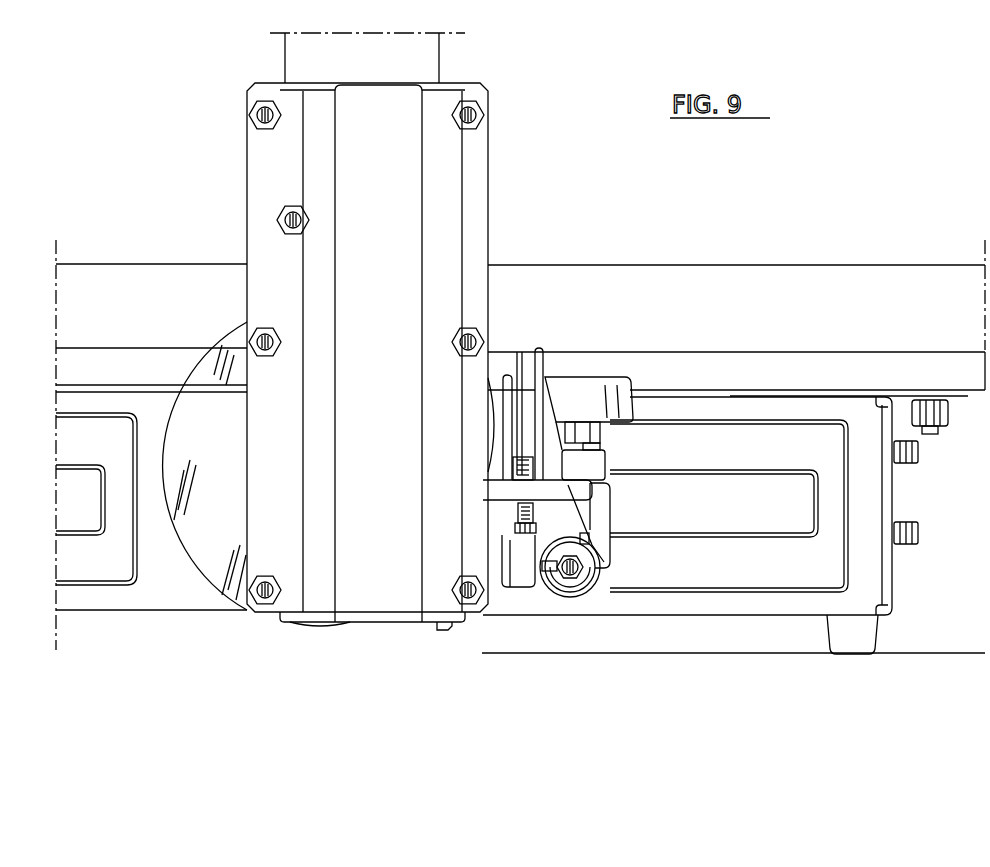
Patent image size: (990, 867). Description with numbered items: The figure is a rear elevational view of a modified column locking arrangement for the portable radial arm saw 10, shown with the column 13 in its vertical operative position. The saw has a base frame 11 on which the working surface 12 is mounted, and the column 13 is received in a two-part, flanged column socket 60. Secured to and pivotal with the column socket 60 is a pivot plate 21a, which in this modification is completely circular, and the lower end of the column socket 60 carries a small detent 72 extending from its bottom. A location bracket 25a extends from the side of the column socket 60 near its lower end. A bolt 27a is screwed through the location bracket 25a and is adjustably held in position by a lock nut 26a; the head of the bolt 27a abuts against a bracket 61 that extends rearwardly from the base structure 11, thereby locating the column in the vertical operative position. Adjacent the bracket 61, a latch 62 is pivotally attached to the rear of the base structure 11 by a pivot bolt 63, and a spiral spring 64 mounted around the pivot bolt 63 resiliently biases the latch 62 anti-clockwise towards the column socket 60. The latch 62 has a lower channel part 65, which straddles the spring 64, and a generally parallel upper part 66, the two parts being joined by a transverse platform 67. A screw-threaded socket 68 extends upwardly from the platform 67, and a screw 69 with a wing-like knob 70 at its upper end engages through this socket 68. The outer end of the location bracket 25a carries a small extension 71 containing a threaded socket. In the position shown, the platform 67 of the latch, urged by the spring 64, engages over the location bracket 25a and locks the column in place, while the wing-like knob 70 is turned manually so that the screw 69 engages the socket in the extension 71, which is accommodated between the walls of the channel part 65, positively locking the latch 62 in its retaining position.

The radial arm saw 10 is at (686, 243).
The base frame 11 is at (905, 591).
The working surface 12 is at (782, 343).
The column 13 is at (439, 60).
The pivot plate 21a is at (210, 540).
The location bracket 25a is at (608, 570).
The lock nut 26a is at (517, 352).
The bolt 27a is at (522, 508).
The column socket 60 is at (502, 138).
The bracket 61 is at (508, 500).
The latch 62 is at (640, 493).
The pivot bolt 63 is at (573, 580).
The spiral spring 64 is at (598, 585).
The lower channel part 65 is at (605, 548).
The upper part 66 is at (535, 365).
The transverse platform 67 is at (560, 488).
The screw-threaded socket 68 is at (585, 470).
The screw 69 is at (600, 448).
The wing-like knob 70 is at (600, 395).
The extension 71 is at (578, 443).
The detent 72 is at (443, 630).